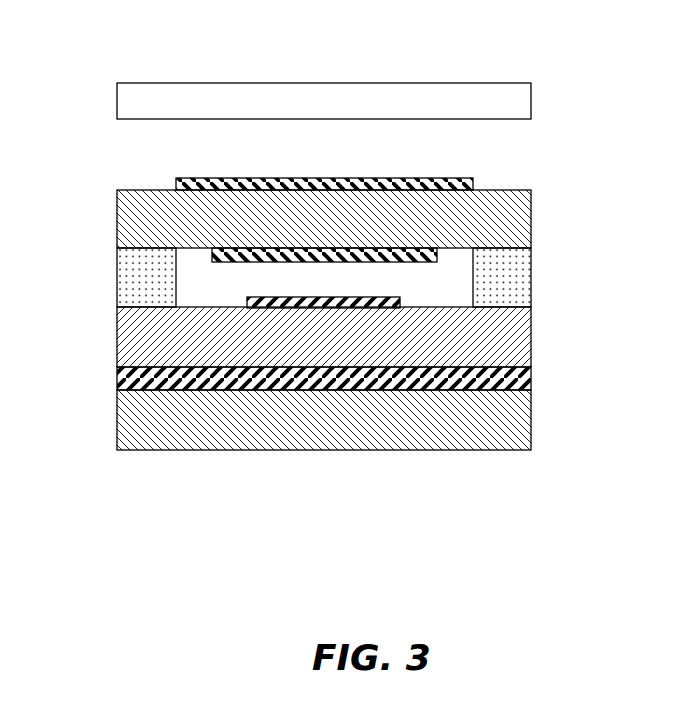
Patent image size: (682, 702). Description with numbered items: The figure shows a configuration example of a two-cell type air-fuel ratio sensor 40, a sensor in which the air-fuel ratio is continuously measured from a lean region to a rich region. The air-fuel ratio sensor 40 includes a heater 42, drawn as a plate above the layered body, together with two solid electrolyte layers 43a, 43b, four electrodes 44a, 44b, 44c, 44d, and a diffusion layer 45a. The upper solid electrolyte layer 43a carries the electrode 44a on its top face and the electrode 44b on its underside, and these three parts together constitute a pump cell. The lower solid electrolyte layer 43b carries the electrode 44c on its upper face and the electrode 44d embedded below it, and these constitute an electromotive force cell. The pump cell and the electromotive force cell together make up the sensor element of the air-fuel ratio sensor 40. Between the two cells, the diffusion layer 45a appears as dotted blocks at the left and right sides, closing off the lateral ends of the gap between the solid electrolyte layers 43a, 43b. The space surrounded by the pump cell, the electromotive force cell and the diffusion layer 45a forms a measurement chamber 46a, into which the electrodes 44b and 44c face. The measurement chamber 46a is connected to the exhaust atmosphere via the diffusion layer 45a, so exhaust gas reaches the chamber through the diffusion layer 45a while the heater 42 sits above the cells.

The air-fuel ratio sensor 40 is at (598, 93).
The heater 42 is at (428, 83).
The solid electrolyte layer 43a is at (531, 225).
The solid electrolyte layer 43b is at (531, 345).
The electrode 44a is at (412, 178).
The electrode 44b is at (238, 263).
The electrode 44c is at (392, 296).
The electrode 44d is at (341, 390).
The diffusion layer 45a is at (531, 258).
The measurement chamber 46a is at (270, 278).